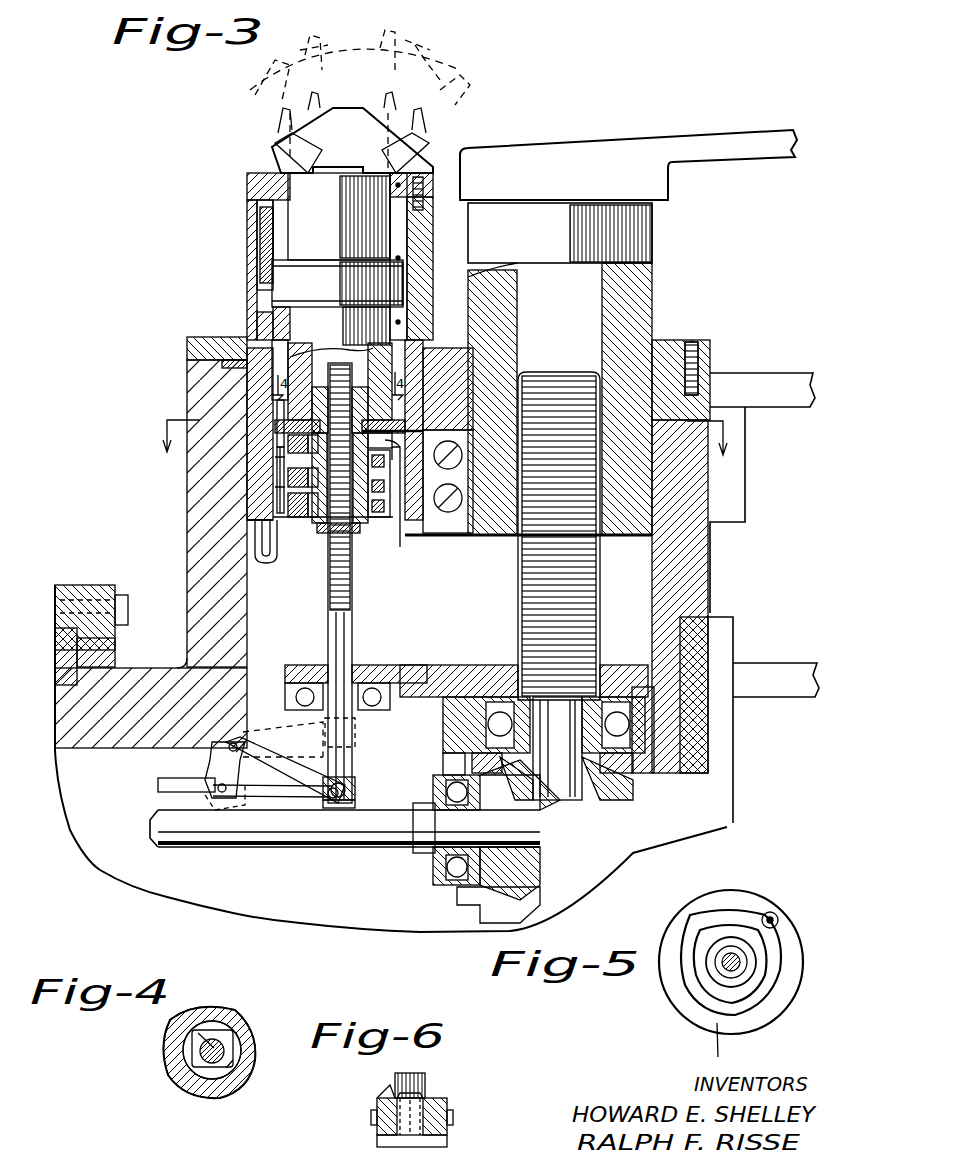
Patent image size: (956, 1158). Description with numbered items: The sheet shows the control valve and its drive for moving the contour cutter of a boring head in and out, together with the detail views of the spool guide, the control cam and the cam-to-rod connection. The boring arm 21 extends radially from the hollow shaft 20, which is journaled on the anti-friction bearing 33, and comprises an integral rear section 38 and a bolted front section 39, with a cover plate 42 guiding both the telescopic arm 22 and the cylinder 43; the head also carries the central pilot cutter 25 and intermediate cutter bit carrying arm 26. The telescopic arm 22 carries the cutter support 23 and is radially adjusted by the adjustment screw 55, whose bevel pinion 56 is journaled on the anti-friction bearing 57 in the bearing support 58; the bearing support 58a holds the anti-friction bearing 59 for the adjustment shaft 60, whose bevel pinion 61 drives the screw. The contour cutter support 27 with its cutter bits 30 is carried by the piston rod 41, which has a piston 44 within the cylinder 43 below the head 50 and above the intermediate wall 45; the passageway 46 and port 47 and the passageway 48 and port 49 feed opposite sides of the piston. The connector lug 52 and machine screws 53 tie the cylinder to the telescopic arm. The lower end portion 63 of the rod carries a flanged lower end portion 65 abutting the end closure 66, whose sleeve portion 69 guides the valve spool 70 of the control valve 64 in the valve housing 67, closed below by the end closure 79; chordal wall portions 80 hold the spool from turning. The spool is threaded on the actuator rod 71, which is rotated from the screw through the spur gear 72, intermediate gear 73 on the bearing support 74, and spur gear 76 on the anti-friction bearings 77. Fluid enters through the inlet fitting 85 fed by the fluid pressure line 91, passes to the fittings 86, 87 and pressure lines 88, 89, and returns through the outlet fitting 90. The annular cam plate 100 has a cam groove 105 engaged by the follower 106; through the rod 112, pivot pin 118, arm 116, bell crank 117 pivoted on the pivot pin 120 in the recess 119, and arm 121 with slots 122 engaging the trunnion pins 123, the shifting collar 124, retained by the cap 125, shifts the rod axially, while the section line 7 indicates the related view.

In FIG. 3, the section line 7 is at (444, 442).
In FIG. 3, the hollow shaft 20 is at (144, 668).
In FIG. 3, the boring arm 21 is at (722, 562).
In FIG. 3, the telescopic arm 22 is at (655, 248).
In FIG. 3, the cutter support 23 is at (650, 145).
In FIG. 3, the central pilot cutter 25 is at (770, 663).
In FIG. 3, the intermediate cutter bit carrying arm 26 is at (783, 374).
In FIG. 3, the contour cutter support 27 is at (343, 118).
In FIG. 3, the cutter bit 30 is at (308, 102).
In FIG. 3, the anti-friction bearing 33 is at (62, 635).
In FIG. 3, the rear section 38 is at (187, 387).
In FIG. 3, the front section 39 is at (700, 378).
In FIG. 3, the piston rod 41 is at (392, 232).
In FIG. 3, the cover plate 42 is at (672, 356).
In FIG. 3, the cylinder 43 is at (247, 240).
In FIG. 3, the piston 44 is at (285, 287).
In FIG. 3, the intermediate wall 45 is at (438, 345).
In FIG. 3, the fluid pressure passageway 46 is at (265, 333).
In FIG. 3, the port 47 is at (262, 313).
In FIG. 3, the passageway 48 is at (263, 250).
In FIG. 3, the port 49 is at (286, 201).
In FIG. 3, the head 50 is at (265, 176).
In FIG. 3, the connector lug 52 is at (455, 537).
In FIG. 3, the machine screws 53 is at (463, 455).
In FIG. 3, the adjustment screw 55 is at (516, 592).
In FIG. 3, the bevel pinion 56 is at (596, 860).
In FIG. 3, the anti-friction bearing 57 is at (618, 700).
In FIG. 3, the bearing support 58 is at (652, 776).
In FIG. 3, the bearing support 58a is at (444, 760).
In FIG. 3, the anti-friction bearing 59 is at (444, 870).
In FIG. 3, the adjustment shaft 60 is at (232, 849).
In FIG. 5, the adjustment shaft 60 is at (740, 963).
In FIG. 3, the bevel pinion 61 is at (498, 907).
In FIG. 3, the lower end portion 63 is at (430, 365).
In FIG. 4, the lower end portion 63 is at (190, 1082).
In FIG. 3, the control valve 64 is at (285, 525).
In FIG. 3, the radially flanged lower end portion 65 is at (408, 380).
In FIG. 3, the end closure 66 is at (408, 427).
In FIG. 3, the valve housing 67 is at (276, 445).
In FIG. 3, the sleeve portion 69 is at (316, 385).
In FIG. 4, the sleeve portion 69 is at (205, 1075).
In FIG. 3, the valve spool 70 is at (360, 385).
In FIG. 3, the actuator rod 71 is at (353, 600).
In FIG. 4, the actuator rod 71 is at (240, 1035).
In FIG. 6, the actuator rod 71 is at (425, 1078).
In FIG. 3, the spur gear 72 is at (478, 665).
In FIG. 6, the spur gear 72 is at (400, 1095).
In FIG. 3, the intermediate gear 73 is at (403, 665).
In FIG. 3, the bearing support 74 is at (388, 712).
In FIG. 3, the spur gear 76 is at (362, 665).
In FIG. 3, the anti-friction bearings 77 is at (287, 697).
In FIG. 3, the end closure 79 is at (378, 520).
In FIG. 4, the chordal wall portions 80 is at (215, 1040).
In FIG. 3, the inlet fitting 85 is at (473, 479).
In FIG. 3, the fitting 86 is at (290, 470).
In FIG. 3, the fitting 87 is at (292, 500).
In FIG. 3, the pressure line 88 is at (277, 470).
In FIG. 3, the pressure line 89 is at (250, 537).
In FIG. 3, the outlet fitting 90 is at (420, 444).
In FIG. 3, the fluid pressure line 91 is at (402, 545).
In FIG. 5, the annular cam plate 100 is at (675, 1012).
In FIG. 5, the cam groove 105 is at (737, 912).
In FIG. 5, the follower 106 is at (780, 920).
In FIG. 3, the rod 112 is at (158, 786).
In FIG. 3, the arm 116 is at (212, 780).
In FIG. 3, the bell crank 117 is at (290, 800).
In FIG. 3, the pivot pin 118 is at (220, 794).
In FIG. 3, the recess 119 is at (255, 737).
In FIG. 3, the pivot pin 120 is at (242, 788).
In FIG. 3, the arm 121 is at (310, 760).
In FIG. 6, the arm 121 is at (380, 1098).
In FIG. 3, the slots 122 is at (330, 798).
In FIG. 3, the trunnion pins 123 is at (356, 788).
In FIG. 6, the trunnion pins 123 is at (453, 1115).
In FIG. 3, the shifting collar 124 is at (356, 800).
In FIG. 6, the shifting collar 124 is at (445, 1100).
In FIG. 3, the cap 125 is at (352, 780).
In FIG. 6, the cap 125 is at (447, 1141).